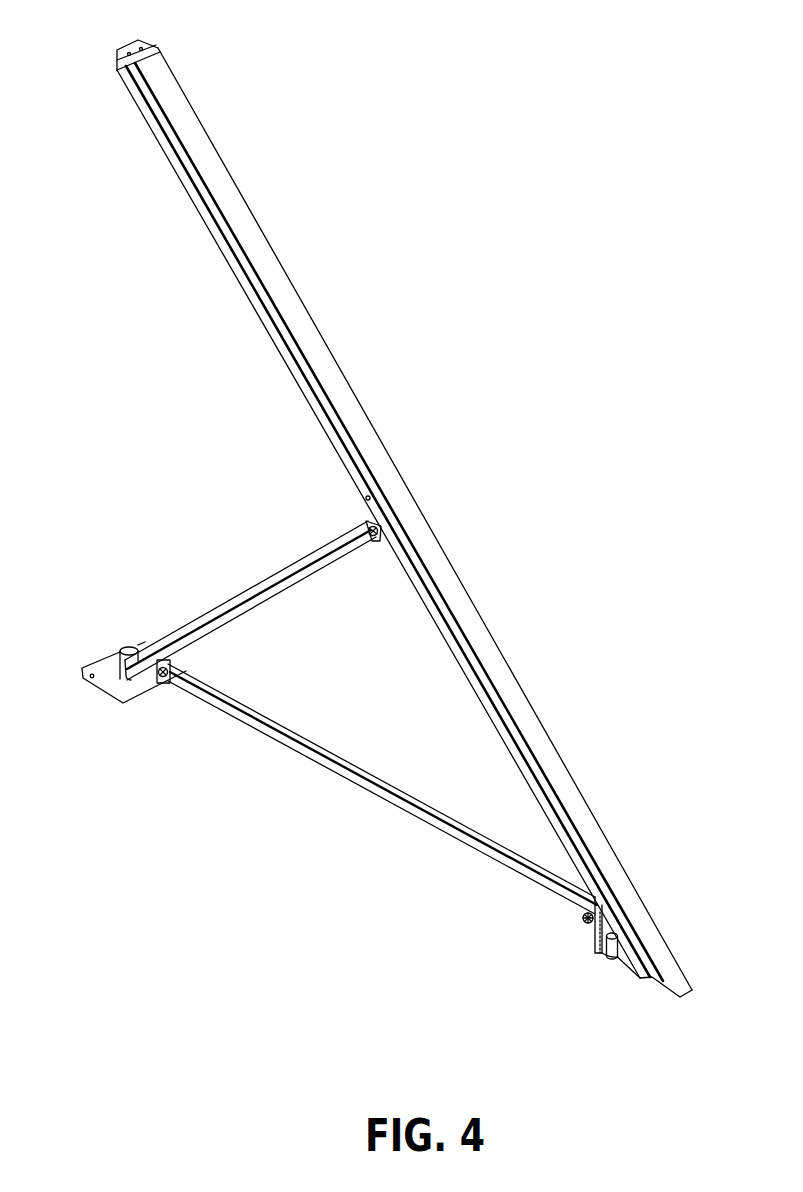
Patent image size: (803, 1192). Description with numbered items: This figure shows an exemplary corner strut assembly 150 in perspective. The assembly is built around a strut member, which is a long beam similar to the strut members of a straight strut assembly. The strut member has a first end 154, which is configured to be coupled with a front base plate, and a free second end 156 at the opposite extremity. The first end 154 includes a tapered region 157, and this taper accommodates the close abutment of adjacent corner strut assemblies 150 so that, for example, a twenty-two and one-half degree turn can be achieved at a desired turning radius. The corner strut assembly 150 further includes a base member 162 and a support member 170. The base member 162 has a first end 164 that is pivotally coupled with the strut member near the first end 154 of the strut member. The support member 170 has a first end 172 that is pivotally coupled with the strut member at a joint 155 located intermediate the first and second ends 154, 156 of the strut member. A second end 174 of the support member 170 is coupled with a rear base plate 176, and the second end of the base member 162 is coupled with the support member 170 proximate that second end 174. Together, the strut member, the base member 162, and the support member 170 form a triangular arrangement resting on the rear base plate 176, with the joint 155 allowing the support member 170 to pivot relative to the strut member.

The corner strut assembly 150 is at (377, 540).
The first end 154 is at (650, 886).
The joint 155 is at (378, 541).
The free second end 156 is at (172, 62).
The tapered region 157 is at (660, 1008).
The base member 162 is at (326, 762).
The first end 164 is at (575, 950).
The support member 170 is at (250, 597).
The first end 172 is at (342, 487).
The second end 174 is at (139, 634).
The rear base plate 176 is at (107, 690).